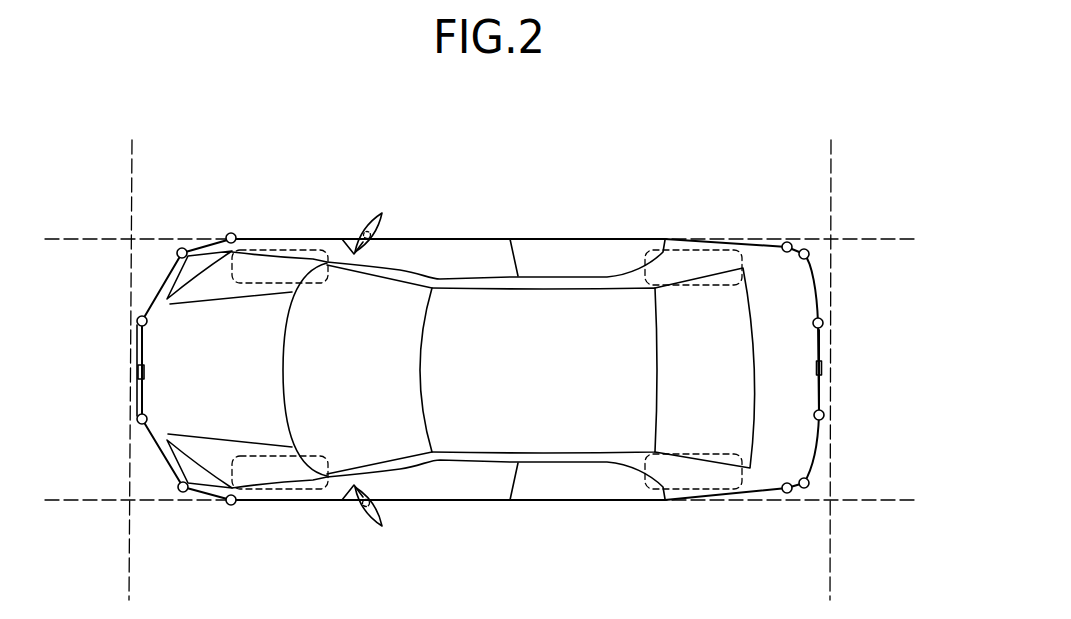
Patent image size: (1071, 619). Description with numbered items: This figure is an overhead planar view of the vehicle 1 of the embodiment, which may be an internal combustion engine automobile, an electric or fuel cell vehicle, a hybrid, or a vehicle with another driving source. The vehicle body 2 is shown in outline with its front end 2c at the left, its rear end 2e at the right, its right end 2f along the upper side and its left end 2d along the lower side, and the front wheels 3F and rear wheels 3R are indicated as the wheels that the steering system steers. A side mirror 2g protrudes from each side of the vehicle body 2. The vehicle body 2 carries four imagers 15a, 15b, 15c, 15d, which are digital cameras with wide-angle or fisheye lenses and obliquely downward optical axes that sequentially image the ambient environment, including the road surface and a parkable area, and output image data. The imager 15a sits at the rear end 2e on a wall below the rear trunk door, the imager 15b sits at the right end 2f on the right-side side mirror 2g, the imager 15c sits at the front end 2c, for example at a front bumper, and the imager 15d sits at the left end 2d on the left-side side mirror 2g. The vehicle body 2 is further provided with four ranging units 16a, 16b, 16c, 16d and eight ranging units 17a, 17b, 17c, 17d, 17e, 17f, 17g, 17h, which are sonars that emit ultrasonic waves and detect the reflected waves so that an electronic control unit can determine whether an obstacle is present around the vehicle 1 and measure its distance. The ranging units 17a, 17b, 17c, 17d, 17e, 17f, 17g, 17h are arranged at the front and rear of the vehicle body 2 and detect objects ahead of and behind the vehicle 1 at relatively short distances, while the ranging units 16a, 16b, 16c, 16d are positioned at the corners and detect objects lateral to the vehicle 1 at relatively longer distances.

The vehicle 1 is at (598, 154).
The vehicle body 2 is at (764, 242).
The front end 2c is at (137, 390).
The left end 2d is at (580, 500).
The rear end 2e is at (822, 396).
The right end 2f is at (606, 238).
The side mirror 2g is at (387, 217).
The front wheels 3F is at (278, 250).
The rear wheels 3R is at (692, 250).
The imager 15a is at (823, 368).
The imager 15b is at (367, 231).
The imager 15c is at (137, 371).
The imager 15d is at (365, 518).
The ranging unit 16a is at (787, 493).
The ranging unit 16b is at (787, 242).
The ranging unit 16c is at (231, 233).
The ranging unit 16d is at (231, 505).
The ranging unit 17a is at (809, 483).
The ranging unit 17b is at (824, 415).
The ranging unit 17c is at (823, 323).
The ranging unit 17d is at (808, 251).
The ranging unit 17e is at (177, 253).
The ranging unit 17f is at (137, 321).
The ranging unit 17g is at (137, 419).
The ranging unit 17h is at (178, 487).